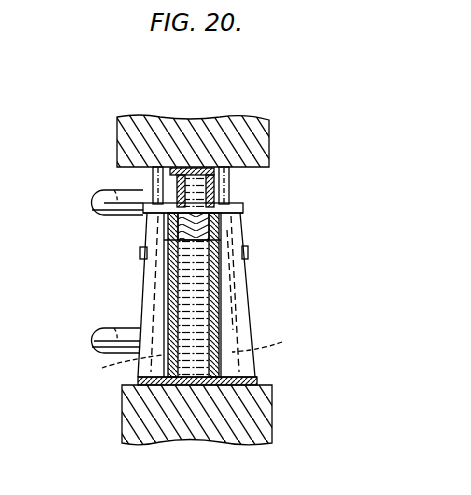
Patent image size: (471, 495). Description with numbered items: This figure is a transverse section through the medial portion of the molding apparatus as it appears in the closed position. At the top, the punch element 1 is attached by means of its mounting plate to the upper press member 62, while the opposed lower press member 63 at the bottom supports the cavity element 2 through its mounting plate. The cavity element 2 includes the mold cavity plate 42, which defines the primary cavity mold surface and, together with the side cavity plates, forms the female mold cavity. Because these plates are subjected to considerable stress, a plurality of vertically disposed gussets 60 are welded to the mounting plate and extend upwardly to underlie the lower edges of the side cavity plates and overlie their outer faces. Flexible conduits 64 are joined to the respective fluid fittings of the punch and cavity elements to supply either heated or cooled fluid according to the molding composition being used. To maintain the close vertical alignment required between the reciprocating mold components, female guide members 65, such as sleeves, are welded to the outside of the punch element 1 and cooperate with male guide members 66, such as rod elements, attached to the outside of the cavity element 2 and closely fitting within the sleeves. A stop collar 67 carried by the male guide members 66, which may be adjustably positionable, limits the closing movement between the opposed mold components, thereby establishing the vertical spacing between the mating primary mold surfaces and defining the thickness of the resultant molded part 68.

The punch element 1 is at (230, 184).
The cavity element 2 is at (141, 292).
The mold cavity plate 42 is at (220, 229).
The gussets 60 is at (248, 311).
The upper press member 62 is at (262, 133).
The lower press member 63 is at (262, 416).
The flexible conduits 64 is at (106, 202).
The female guide members 65 is at (243, 213).
The male guide members 66 is at (192, 354).
The stop collar 67 is at (247, 252).
The molded part 68 is at (214, 200).